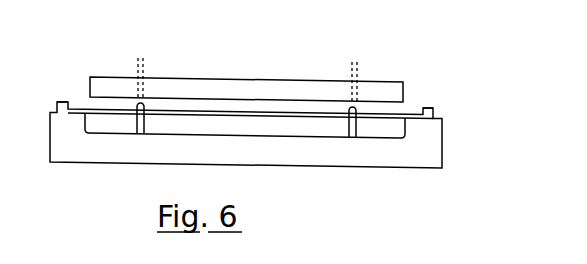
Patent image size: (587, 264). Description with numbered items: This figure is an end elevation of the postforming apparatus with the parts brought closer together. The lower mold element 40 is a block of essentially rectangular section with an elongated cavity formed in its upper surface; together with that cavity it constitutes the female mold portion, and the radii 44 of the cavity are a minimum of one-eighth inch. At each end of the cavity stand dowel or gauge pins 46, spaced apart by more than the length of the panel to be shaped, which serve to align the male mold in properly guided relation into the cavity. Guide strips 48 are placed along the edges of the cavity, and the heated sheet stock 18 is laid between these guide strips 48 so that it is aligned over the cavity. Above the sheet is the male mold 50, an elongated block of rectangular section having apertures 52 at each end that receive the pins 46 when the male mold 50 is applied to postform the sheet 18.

The heated sheet stock 18 is at (398, 115).
The lower mold element 40 is at (447, 145).
The radii 44 is at (95, 127).
The dowel or gauge pins 46 is at (146, 121).
The guide strips 48 is at (66, 101).
The male mold 50 is at (228, 75).
The apertures 52 is at (140, 60).